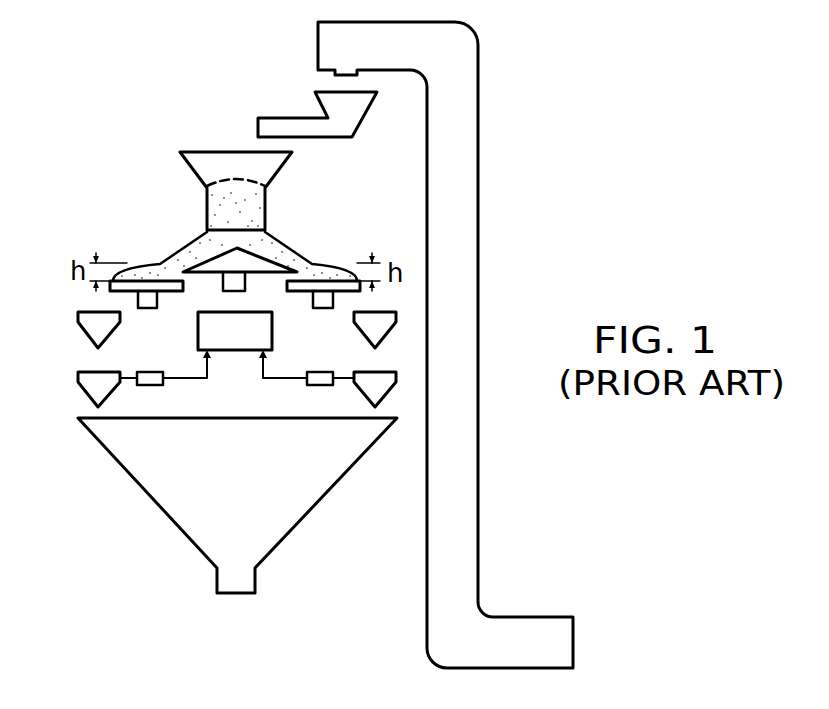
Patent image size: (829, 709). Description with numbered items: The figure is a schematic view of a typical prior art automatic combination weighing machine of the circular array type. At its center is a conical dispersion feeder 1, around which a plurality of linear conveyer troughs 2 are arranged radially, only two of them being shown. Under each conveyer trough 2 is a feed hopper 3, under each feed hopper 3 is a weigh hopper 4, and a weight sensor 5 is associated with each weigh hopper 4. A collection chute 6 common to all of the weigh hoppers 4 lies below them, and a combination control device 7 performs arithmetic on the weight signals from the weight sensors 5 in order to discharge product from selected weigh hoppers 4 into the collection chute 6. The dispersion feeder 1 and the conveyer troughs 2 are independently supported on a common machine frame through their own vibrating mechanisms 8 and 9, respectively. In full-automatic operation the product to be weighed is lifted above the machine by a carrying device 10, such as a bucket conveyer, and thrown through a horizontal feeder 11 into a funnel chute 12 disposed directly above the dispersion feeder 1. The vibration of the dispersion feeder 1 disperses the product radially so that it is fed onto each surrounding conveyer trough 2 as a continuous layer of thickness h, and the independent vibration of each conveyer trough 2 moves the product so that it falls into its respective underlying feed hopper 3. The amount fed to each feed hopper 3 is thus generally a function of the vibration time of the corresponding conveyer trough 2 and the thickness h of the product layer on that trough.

The dispersion feeder 1 is at (255, 260).
The linear conveyer trough 2 is at (148, 272).
The feed hopper 3 is at (78, 320).
The weigh hopper 4 is at (78, 378).
The weight sensor 5 is at (158, 386).
The collection chute 6 is at (333, 485).
The combination control device 7 is at (242, 343).
The vibrating mechanism 8 is at (226, 289).
The vibrating mechanism 9 is at (150, 309).
The carrying device 10 is at (478, 157).
The horizontal feeder 11 is at (363, 120).
The funnel chute 12 is at (210, 150).